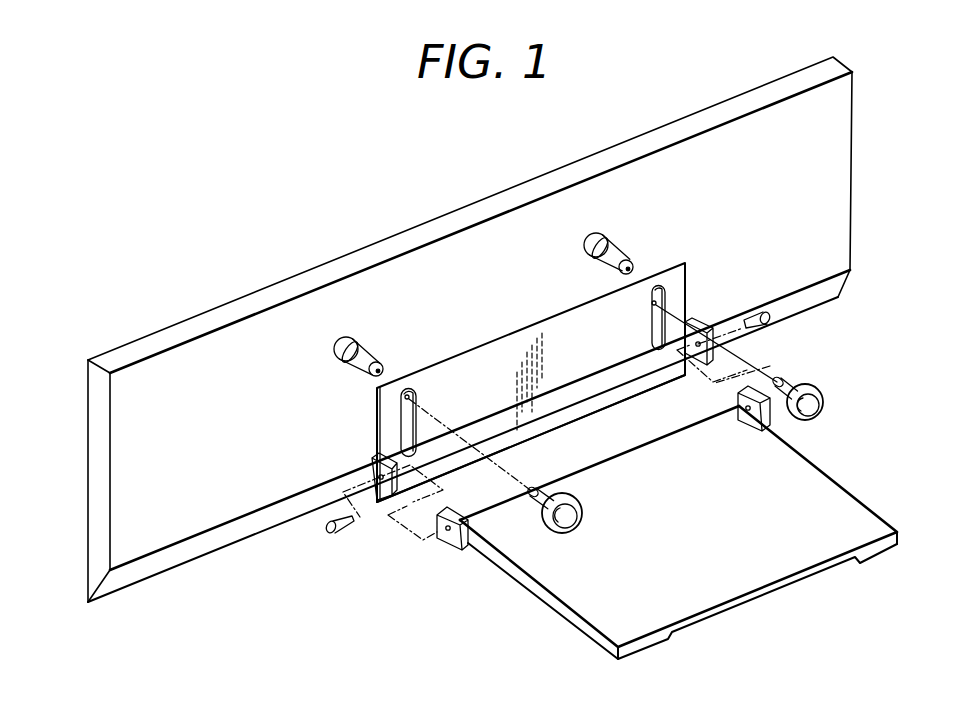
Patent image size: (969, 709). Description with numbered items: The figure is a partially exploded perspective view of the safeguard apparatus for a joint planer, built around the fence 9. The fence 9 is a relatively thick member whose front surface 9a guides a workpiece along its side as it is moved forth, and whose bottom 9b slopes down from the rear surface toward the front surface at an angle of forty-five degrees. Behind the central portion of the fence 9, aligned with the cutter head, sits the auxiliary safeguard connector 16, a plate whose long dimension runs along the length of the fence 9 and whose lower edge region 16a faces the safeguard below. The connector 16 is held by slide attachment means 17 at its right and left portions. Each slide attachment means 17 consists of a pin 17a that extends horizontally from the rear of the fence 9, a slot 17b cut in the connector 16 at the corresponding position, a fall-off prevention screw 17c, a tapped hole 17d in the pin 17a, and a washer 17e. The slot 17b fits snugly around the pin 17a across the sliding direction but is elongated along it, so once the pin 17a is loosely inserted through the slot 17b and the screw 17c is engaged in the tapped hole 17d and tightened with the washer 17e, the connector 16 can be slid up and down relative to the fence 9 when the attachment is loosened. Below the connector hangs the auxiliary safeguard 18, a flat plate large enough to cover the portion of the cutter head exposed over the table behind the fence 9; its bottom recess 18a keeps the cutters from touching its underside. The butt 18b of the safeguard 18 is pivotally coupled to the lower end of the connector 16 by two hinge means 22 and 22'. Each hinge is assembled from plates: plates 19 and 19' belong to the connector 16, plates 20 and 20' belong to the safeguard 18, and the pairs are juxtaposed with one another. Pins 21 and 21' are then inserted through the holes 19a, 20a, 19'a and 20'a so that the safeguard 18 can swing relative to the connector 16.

The fence 9 is at (441, 216).
The front surface 9a is at (88, 470).
The bottom 9b is at (208, 555).
The auxiliary safeguard connector 16 is at (488, 343).
The lower edge of mounting plate 16a is at (616, 404).
The slide attachment means 17 is at (387, 364).
The pin 17a is at (334, 358).
The slot 17b is at (413, 405).
The fall-off prevention screw 17c is at (572, 488).
The tapped hole 17d is at (366, 378).
The washer 17e is at (586, 515).
The auxiliary safeguard 18 is at (540, 601).
The bottom recess 18a is at (762, 598).
The butt 18b is at (605, 462).
The plate 19 is at (356, 468).
The hole 19a is at (378, 477).
The plate 19' is at (707, 307).
The hole 19'a is at (651, 362).
The plate 20 is at (460, 556).
The hole 20a is at (446, 531).
The plate 20' is at (800, 422).
The hole 20'a is at (739, 435).
The pin 21 is at (332, 550).
The pin 21' is at (767, 289).
The hinge means 22 is at (393, 537).
The hinge means 22' is at (768, 355).